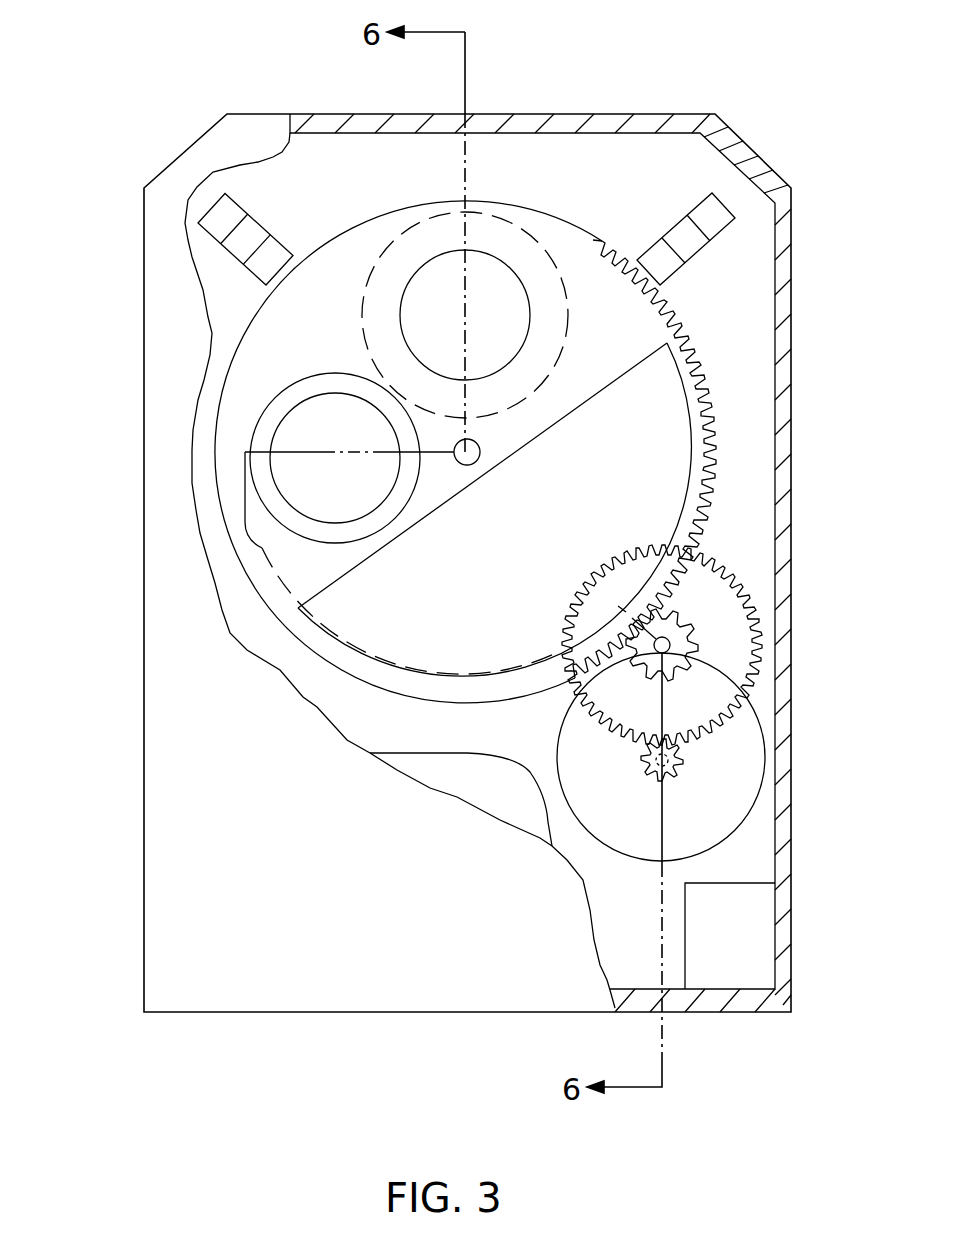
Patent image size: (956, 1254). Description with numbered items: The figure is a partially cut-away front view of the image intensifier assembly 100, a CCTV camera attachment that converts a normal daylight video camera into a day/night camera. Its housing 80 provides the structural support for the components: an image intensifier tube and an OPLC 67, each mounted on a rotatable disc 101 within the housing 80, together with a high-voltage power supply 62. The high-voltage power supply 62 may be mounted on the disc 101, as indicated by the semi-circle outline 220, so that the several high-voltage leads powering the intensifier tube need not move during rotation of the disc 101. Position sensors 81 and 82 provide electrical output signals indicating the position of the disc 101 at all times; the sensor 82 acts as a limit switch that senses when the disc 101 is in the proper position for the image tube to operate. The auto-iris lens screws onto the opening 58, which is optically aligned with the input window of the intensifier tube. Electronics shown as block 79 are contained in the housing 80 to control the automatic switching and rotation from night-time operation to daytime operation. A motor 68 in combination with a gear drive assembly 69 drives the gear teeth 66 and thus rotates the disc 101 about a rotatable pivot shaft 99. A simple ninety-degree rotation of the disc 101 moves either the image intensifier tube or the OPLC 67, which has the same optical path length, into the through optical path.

The image intensifier assembly 100 is at (117, 817).
The housing 80 is at (297, 1012).
The position sensor 81 is at (202, 220).
The position sensor 82 is at (720, 204).
The rotatable disc 101 is at (532, 207).
The opening 58 is at (528, 350).
The OPLC 67 is at (278, 424).
The rotatable pivot shaft 99 is at (476, 462).
The semi-circle outline 220 is at (350, 572).
The gear teeth 66 is at (706, 504).
The gear drive assembly 69 is at (746, 594).
The motor 68 is at (723, 823).
The electronics block 79 is at (767, 943).
The high-voltage power supply 62 is at (497, 792).